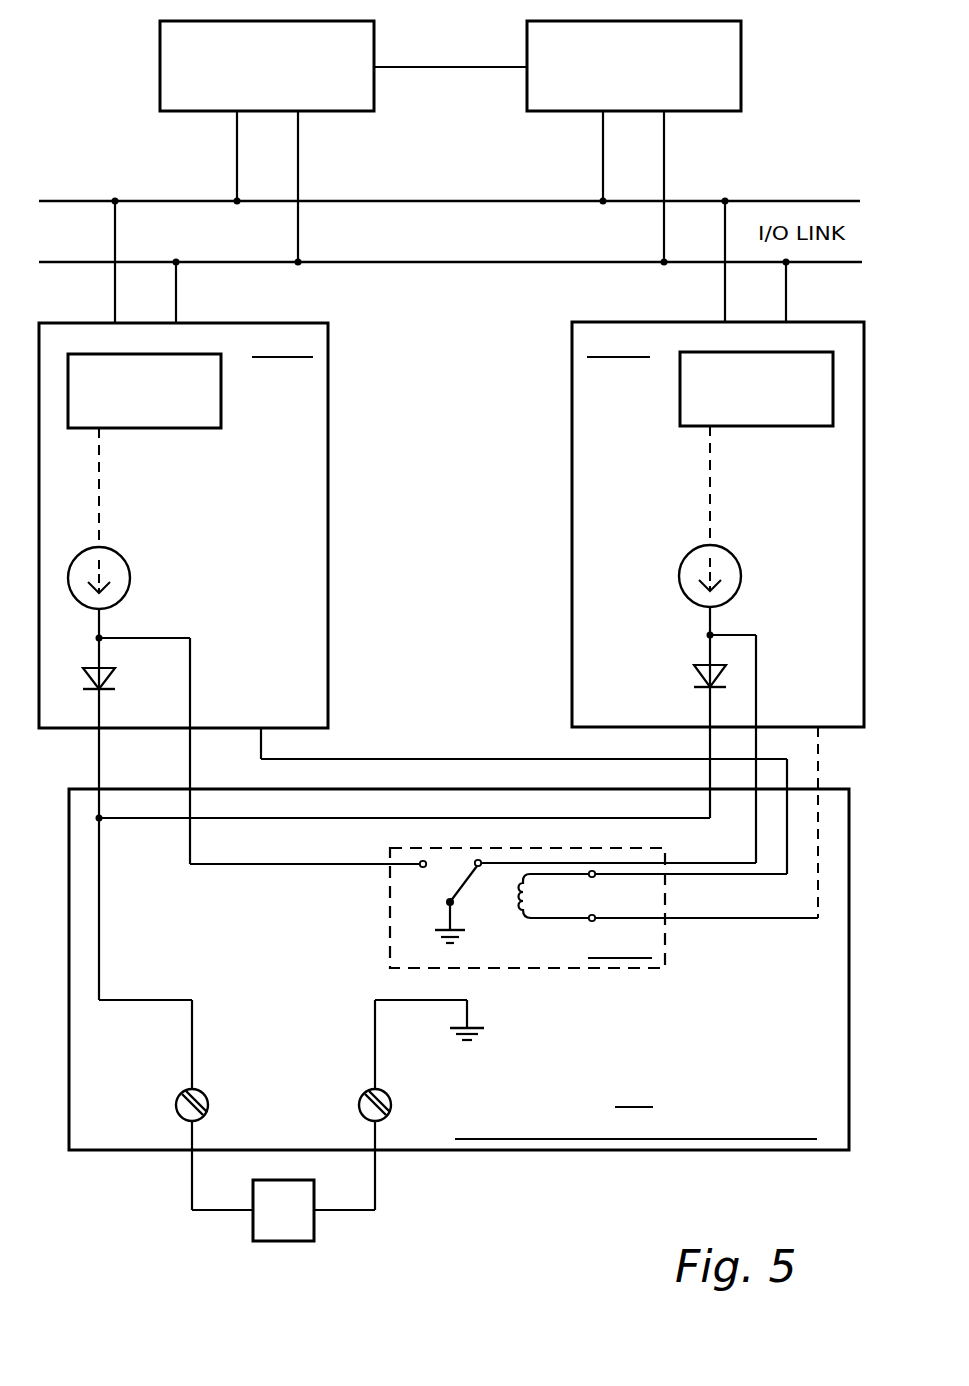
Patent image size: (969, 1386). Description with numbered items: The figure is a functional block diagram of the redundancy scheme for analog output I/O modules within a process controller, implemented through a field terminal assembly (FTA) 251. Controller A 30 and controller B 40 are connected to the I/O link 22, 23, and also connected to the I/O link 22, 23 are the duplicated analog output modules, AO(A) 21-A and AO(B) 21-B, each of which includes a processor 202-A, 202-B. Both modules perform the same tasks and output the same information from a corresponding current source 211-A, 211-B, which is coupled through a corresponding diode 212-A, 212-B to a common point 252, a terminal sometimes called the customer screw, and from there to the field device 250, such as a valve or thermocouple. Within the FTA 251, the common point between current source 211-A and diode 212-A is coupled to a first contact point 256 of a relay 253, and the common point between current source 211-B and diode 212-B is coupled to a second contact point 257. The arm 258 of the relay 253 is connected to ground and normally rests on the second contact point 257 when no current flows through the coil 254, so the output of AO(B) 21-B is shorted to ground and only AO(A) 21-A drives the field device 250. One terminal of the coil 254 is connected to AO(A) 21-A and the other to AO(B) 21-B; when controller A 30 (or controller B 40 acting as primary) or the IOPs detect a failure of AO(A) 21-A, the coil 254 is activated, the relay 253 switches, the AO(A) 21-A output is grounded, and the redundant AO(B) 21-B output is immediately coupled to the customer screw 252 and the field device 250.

The controller A 30 is at (159, 49).
The controller B 40 is at (742, 50).
The I/O link 22 is at (746, 200).
The I/O link 23 is at (777, 263).
The analog output I/O module AO(A) 21-A is at (329, 373).
The analog output I/O module AO(B) 21-B is at (572, 363).
The processor 202-A is at (190, 429).
The processor 202-B is at (693, 427).
The current source 211-A is at (130, 577).
The current source 211-B is at (731, 551).
The diode 212-A is at (107, 679).
The diode 212-B is at (694, 661).
The field terminal assembly (FTA) 251 is at (459, 969).
The relay 253 is at (667, 948).
The coil 254 is at (520, 913).
The first contact point 256 is at (421, 861).
The second contact point 257 is at (480, 860).
The arm 258 is at (449, 902).
The common point 252 is at (208, 1105).
The field device 250 is at (297, 1242).